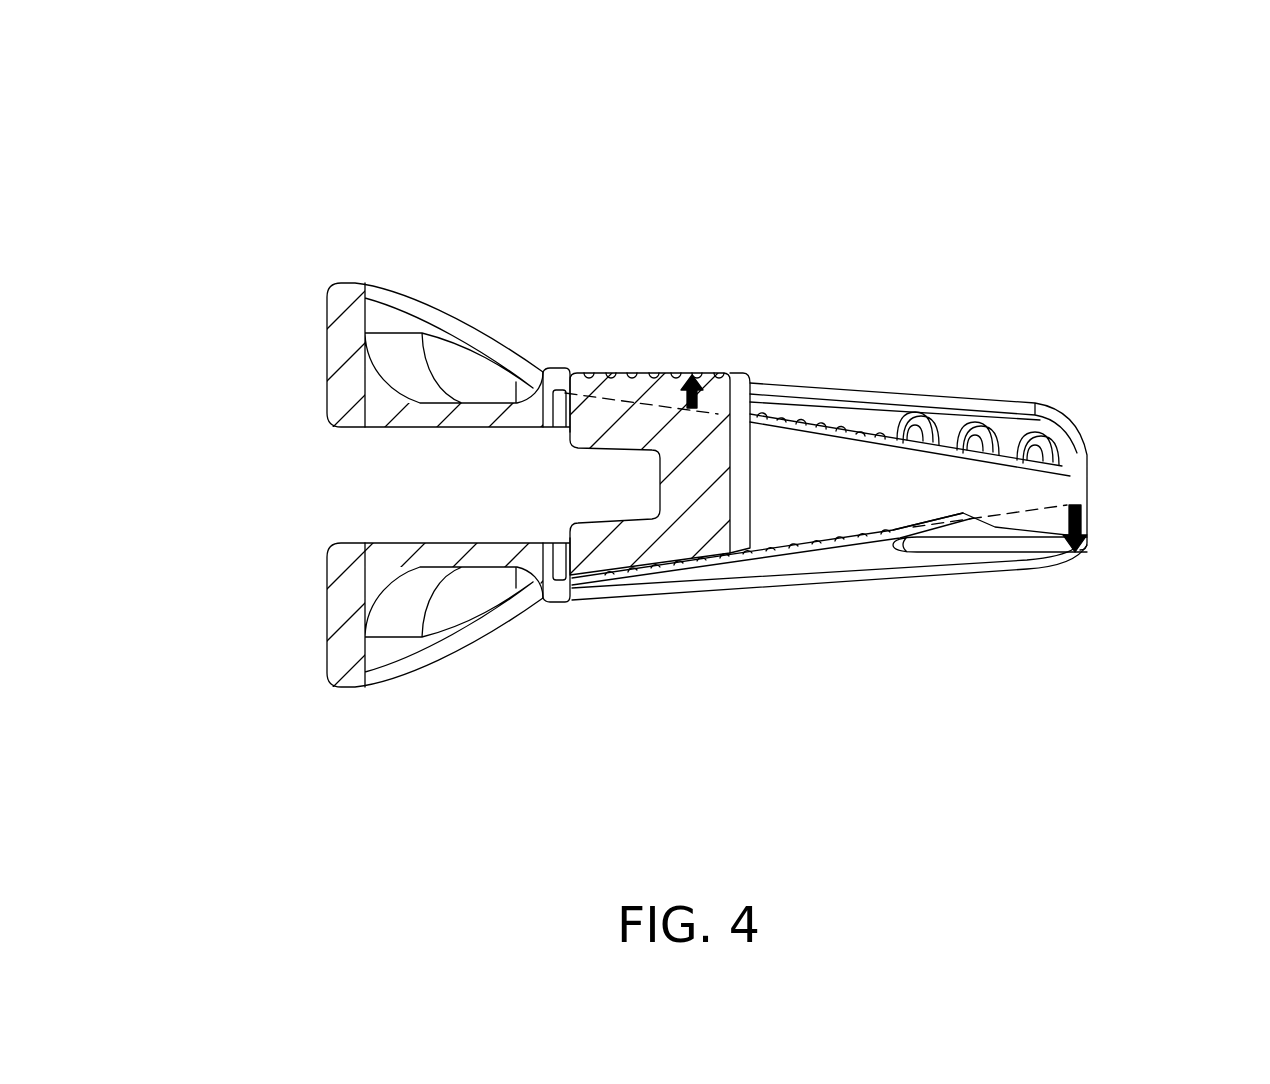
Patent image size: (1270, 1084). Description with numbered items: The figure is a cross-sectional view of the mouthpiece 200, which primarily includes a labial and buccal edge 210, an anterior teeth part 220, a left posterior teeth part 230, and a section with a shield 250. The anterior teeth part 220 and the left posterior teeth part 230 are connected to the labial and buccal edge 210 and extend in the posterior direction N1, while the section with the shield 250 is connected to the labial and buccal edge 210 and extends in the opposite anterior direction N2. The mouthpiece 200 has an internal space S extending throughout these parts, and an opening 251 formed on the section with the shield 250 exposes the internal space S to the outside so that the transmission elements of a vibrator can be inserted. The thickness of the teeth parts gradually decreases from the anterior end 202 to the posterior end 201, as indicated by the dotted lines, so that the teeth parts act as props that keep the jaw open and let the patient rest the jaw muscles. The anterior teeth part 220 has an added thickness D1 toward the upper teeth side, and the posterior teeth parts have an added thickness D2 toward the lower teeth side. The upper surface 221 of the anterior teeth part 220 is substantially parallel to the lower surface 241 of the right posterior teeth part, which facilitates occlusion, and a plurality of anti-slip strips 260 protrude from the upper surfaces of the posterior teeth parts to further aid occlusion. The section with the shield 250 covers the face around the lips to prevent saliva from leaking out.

The mouthpiece 200 is at (302, 84).
The posterior end 201 is at (1114, 449).
The anterior end 202 is at (291, 362).
The labial and buccal edge 210 is at (558, 380).
The anterior teeth part 220 is at (700, 508).
The upper surface 221 is at (625, 377).
The left posterior teeth part 230 is at (838, 480).
The lower surface 241 is at (958, 555).
The section with a shield 250 is at (349, 325).
The opening 251 is at (348, 490).
The anti-slip strips 260 is at (1038, 442).
The added thickness D1 is at (690, 380).
The added thickness D2 is at (1082, 524).
The internal space S is at (465, 505).
The posterior direction N1 is at (988, 836).
The anterior direction N2 is at (373, 830).